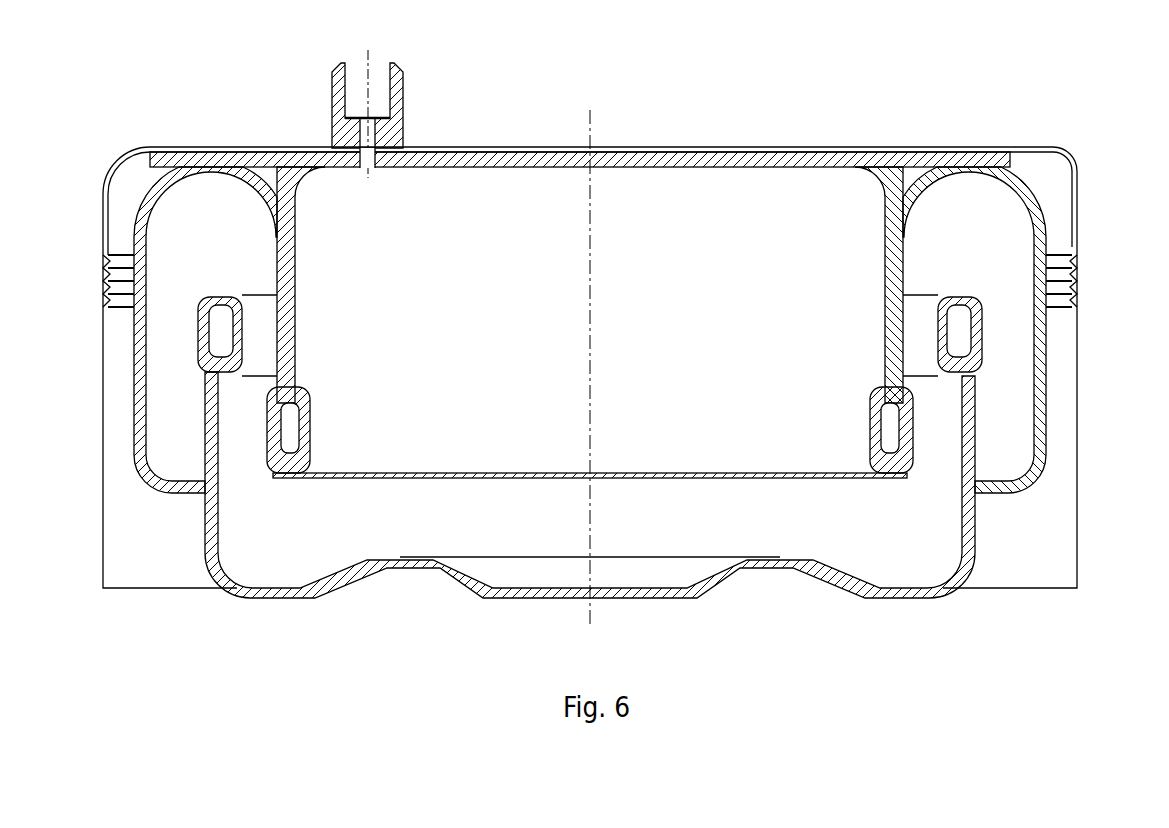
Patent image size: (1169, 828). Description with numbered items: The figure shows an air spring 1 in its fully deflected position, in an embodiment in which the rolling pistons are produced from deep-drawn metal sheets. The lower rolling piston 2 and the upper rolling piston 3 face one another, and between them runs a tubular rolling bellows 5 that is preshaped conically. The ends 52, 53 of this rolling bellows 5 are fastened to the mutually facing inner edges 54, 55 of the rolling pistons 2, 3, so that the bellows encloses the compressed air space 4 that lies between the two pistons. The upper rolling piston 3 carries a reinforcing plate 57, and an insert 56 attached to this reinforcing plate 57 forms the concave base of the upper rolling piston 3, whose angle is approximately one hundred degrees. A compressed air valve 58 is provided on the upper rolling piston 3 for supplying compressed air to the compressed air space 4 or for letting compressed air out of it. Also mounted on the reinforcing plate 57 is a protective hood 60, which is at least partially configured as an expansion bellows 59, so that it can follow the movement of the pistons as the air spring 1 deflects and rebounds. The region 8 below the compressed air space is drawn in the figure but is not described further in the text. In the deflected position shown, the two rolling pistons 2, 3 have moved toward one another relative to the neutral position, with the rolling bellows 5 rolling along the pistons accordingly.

The air spring 1 is at (843, 70).
The rolling piston 2 is at (957, 537).
The upper rolling piston 3 is at (885, 265).
The compressed air space 4 is at (472, 290).
The rolling bellows 5 is at (1040, 405).
The lower chamber 8 is at (305, 541).
The end of the rolling bellows 52 is at (957, 320).
The end of the rolling bellows 53 is at (295, 432).
The inner edge 54 is at (235, 325).
The inner edge 55 is at (875, 418).
The insert 56 is at (1005, 147).
The reinforcing plate 57 is at (923, 150).
The compressed air valve 58 is at (375, 83).
The expansion bellows 59 is at (1080, 270).
The protective hood 60 is at (1080, 208).